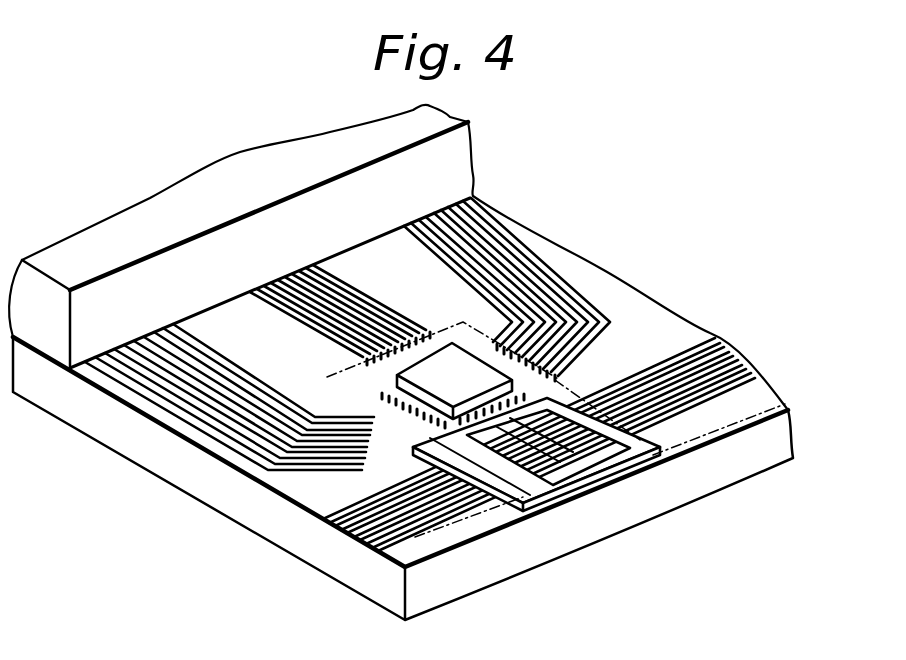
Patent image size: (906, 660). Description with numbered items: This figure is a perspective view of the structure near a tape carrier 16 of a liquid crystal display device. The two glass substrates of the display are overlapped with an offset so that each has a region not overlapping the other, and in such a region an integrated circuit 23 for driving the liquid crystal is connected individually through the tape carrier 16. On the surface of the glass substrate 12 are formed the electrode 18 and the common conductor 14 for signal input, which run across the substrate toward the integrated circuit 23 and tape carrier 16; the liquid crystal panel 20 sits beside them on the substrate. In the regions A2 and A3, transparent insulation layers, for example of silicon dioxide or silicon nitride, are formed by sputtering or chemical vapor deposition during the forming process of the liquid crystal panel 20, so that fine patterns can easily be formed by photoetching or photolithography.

The glass substrate 12 is at (717, 458).
The common conductor 14 is at (740, 357).
The tape carrier 16 is at (558, 490).
The electrode 18 is at (143, 357).
The liquid crystal panel 20 is at (157, 222).
The integrated circuit 23 is at (447, 367).
The region A2 is at (610, 467).
The region A3 is at (783, 401).